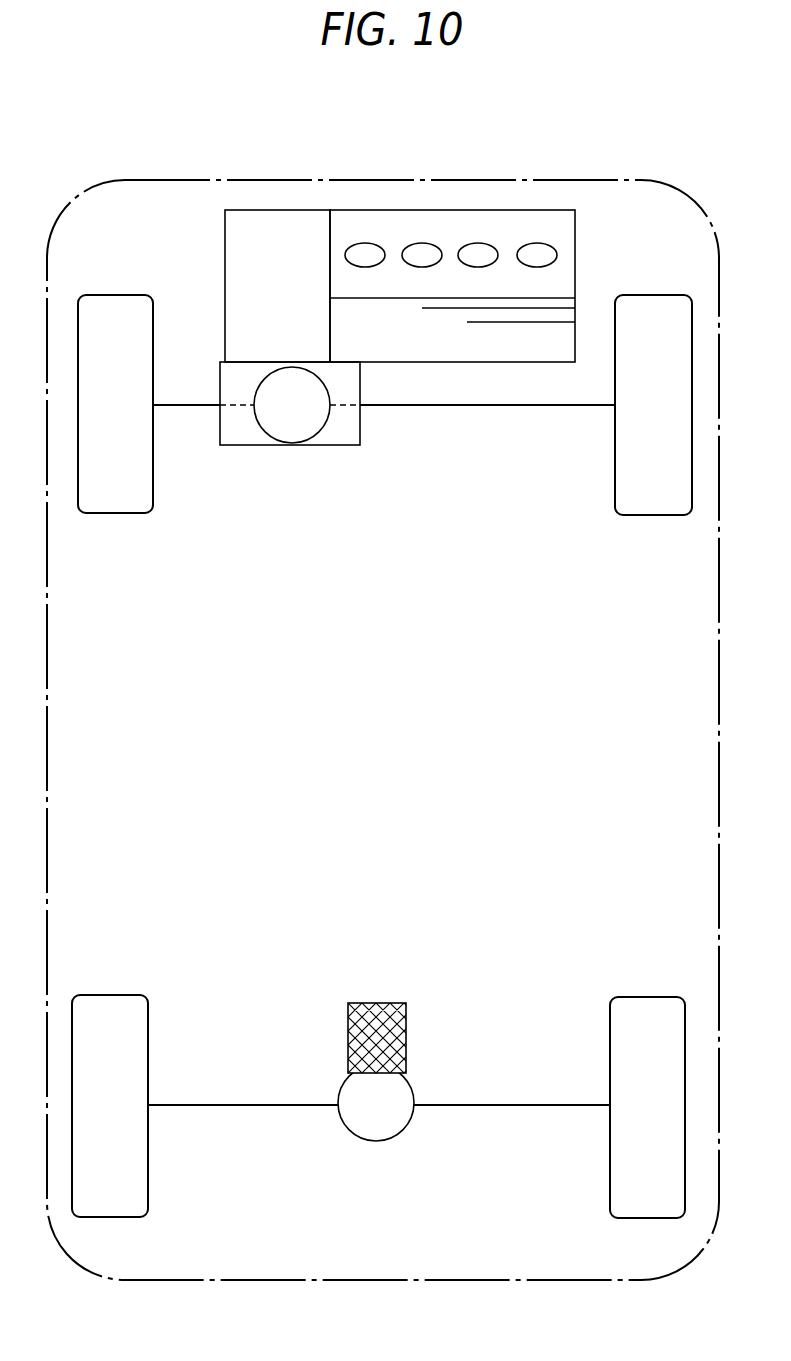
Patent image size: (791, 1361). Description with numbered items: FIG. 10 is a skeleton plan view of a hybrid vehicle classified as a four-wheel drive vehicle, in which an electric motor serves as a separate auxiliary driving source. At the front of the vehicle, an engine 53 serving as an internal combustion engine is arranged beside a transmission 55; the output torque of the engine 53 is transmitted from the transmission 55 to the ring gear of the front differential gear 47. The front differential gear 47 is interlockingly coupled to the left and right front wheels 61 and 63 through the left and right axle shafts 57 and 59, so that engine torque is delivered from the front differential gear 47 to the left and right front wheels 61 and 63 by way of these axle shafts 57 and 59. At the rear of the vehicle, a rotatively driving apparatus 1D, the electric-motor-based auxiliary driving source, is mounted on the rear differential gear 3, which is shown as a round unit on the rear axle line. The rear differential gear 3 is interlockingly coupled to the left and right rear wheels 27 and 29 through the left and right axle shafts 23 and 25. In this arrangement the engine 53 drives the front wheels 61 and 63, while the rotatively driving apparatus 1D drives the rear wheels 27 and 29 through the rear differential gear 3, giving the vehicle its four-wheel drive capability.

The rotatively driving apparatus 1D is at (406, 1032).
The rear differential gear 3 is at (401, 1143).
The left axle shaft 23 is at (243, 1105).
The right axle shaft 25 is at (497, 1105).
The left rear wheel 27 is at (114, 995).
The right rear wheel 29 is at (655, 997).
The front differential gear 47 is at (293, 424).
The engine 53 is at (460, 210).
The transmission 55 is at (270, 215).
The left axle shaft 57 is at (207, 406).
The right axle shaft 59 is at (510, 406).
The left front wheel 61 is at (118, 294).
The right front wheel 63 is at (658, 294).